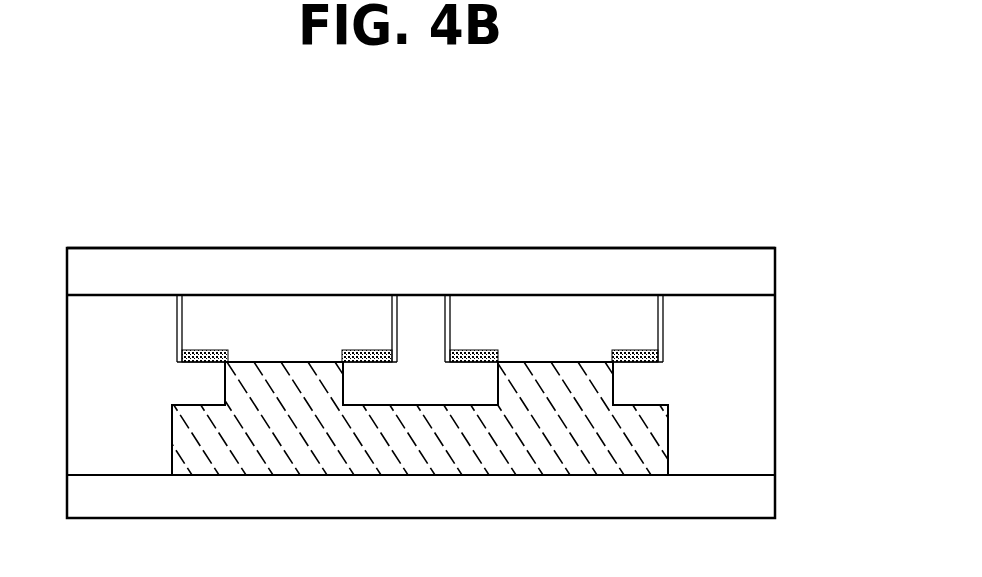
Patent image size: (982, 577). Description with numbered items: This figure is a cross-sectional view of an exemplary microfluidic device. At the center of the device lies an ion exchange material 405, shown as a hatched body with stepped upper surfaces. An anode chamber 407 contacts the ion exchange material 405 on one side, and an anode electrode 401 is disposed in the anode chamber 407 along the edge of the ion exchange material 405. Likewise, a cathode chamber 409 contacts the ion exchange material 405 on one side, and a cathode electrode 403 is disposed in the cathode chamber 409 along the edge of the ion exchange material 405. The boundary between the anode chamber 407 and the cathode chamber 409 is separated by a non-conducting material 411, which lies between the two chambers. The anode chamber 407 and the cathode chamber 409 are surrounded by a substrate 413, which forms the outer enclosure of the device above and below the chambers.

The anode electrode 401 is at (203, 350).
The cathode electrode 403 is at (474, 350).
The ion exchange material 405 is at (481, 418).
The anode chamber 407 is at (281, 315).
The cathode chamber 409 is at (543, 315).
The non-conducting material 411 is at (417, 315).
The substrate 413 is at (755, 273).